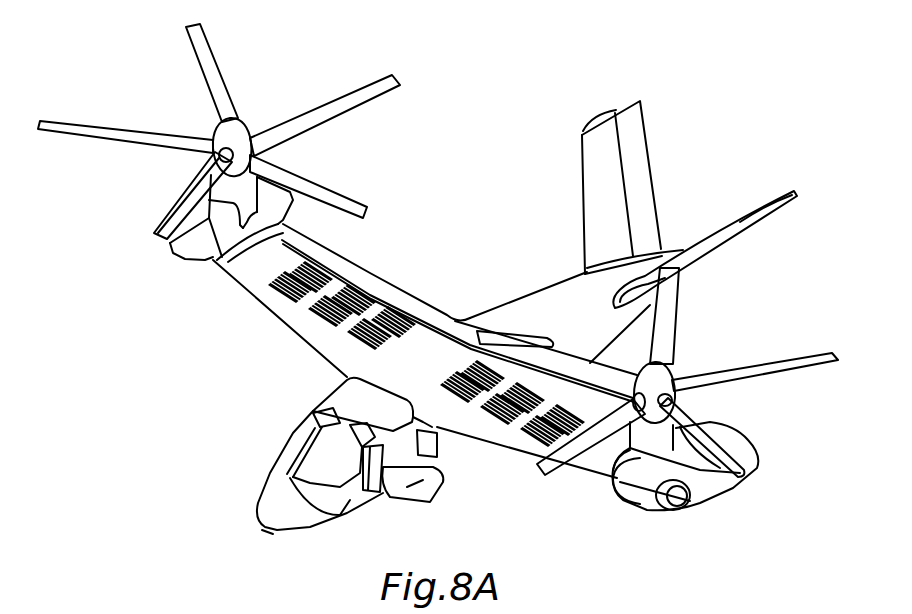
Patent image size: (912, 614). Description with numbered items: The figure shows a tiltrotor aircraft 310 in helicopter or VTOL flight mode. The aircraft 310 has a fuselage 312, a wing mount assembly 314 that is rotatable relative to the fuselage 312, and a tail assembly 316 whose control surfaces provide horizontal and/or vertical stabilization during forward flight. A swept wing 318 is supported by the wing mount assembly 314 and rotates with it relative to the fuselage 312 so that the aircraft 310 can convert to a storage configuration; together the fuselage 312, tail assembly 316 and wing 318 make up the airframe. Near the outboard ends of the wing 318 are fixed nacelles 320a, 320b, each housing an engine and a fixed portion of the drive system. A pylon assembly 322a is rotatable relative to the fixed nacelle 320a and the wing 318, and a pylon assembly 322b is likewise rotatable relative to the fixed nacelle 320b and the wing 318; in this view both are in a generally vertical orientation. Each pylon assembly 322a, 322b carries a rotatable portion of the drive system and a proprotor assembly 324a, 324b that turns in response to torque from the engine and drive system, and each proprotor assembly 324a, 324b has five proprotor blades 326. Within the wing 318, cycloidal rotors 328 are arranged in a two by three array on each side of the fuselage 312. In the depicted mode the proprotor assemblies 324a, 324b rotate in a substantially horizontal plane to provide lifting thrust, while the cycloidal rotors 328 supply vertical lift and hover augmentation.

The tiltrotor aircraft 310 is at (482, 222).
The fuselage 312 is at (553, 302).
The wing mount assembly 314 is at (360, 393).
The tail assembly 316 is at (645, 184).
The swept wing 318 is at (293, 313).
The fixed nacelle 320a is at (740, 449).
The fixed nacelle 320b is at (278, 200).
The pylon assembly 322a is at (625, 450).
The pylon assembly 322b is at (230, 203).
The proprotor assembly 324a is at (663, 380).
The proprotor assembly 324b is at (238, 127).
The proprotor blades 326 is at (200, 40).
The cycloidal rotors 328 is at (350, 300).